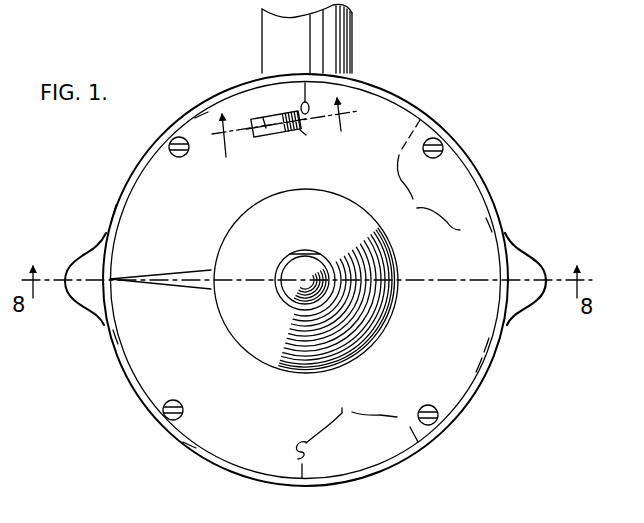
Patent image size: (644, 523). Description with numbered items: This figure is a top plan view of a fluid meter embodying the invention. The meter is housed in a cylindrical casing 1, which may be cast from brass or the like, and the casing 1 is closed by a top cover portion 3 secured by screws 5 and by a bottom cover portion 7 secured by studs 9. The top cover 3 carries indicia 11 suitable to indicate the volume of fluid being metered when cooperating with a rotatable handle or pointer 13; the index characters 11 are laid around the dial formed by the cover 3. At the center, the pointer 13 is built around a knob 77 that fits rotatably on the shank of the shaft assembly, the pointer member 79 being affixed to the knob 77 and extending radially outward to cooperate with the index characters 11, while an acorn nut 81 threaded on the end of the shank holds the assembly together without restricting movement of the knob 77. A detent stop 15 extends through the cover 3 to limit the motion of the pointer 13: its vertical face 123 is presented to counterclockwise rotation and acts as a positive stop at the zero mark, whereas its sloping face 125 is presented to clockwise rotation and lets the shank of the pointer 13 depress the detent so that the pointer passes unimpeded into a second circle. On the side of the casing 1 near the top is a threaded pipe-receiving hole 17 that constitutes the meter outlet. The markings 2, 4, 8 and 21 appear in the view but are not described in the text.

The cylindrical casing 1 is at (482, 184).
The housing section 2 is at (489, 225).
The top cover portion 3 is at (487, 344).
The housing section 4 is at (404, 424).
The screws 5 is at (179, 140).
The bottom cover portion 7 is at (118, 336).
The housing section 8 is at (121, 212).
The studs 9 is at (199, 117).
The indicia 11 is at (378, 299).
The pointer 13 is at (192, 316).
The detent stop 15 is at (288, 134).
The threaded pipe-receiving hole 17 is at (353, 76).
The ear lugs 21 is at (87, 302).
The knob 77 is at (257, 350).
The pointer member 79 is at (203, 268).
The acorn nut 81 is at (300, 262).
The vertical face 123 is at (303, 132).
The sloping face 125 is at (263, 118).